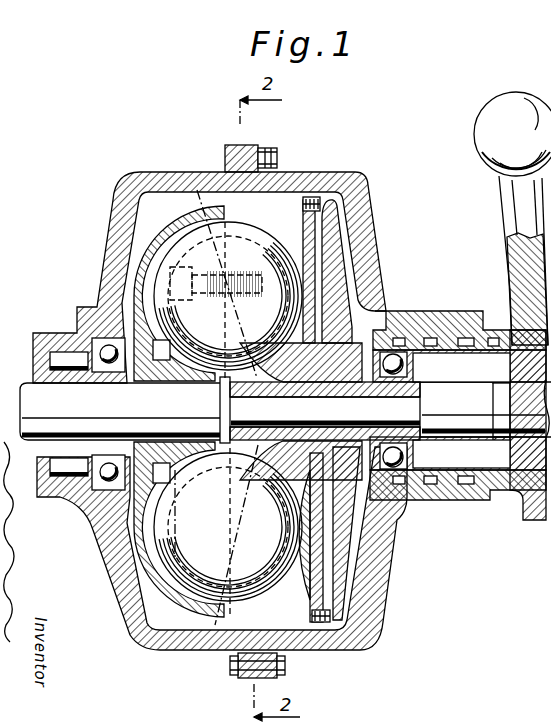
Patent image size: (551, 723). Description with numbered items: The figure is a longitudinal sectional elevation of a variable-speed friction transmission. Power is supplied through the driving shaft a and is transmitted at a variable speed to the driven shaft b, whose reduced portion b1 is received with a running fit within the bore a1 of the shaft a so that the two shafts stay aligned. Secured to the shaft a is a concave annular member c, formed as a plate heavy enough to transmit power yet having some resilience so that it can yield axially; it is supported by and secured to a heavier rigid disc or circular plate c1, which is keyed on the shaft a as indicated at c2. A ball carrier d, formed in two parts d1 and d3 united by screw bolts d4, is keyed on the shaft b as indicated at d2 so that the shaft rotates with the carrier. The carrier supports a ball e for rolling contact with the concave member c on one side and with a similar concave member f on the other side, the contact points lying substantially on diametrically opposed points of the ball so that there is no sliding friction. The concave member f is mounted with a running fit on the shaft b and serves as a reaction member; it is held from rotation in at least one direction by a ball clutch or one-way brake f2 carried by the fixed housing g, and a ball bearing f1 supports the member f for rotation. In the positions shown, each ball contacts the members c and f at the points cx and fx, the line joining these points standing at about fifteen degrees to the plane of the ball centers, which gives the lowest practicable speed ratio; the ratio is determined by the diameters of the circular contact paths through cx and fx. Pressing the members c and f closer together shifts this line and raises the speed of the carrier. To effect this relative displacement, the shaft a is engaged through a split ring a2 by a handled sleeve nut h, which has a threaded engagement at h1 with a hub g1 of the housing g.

The shaft a is at (485, 409).
The bore a1 is at (420, 384).
The split ring a2 is at (494, 443).
The shaft b is at (120, 411).
The reduced portion b1 is at (325, 409).
The concave annular member c is at (303, 242).
The rigid disc c1 is at (340, 277).
The key c2 is at (333, 384).
The contact point cx is at (253, 370).
The ball carrier d is at (190, 460).
The ball carrier part d1 is at (192, 299).
The key d2 is at (168, 378).
The ball carrier part d3 is at (298, 172).
The screw bolts d4 is at (248, 272).
The ball e is at (262, 240).
The concave member f is at (195, 232).
The ball bearing f1 is at (95, 348).
The ball clutch f2 is at (55, 360).
The contact point fx is at (199, 196).
The housing g is at (108, 262).
The hub g1 is at (433, 312).
The handled sleeve nut h is at (512, 330).
The threaded engagement h1 is at (406, 337).